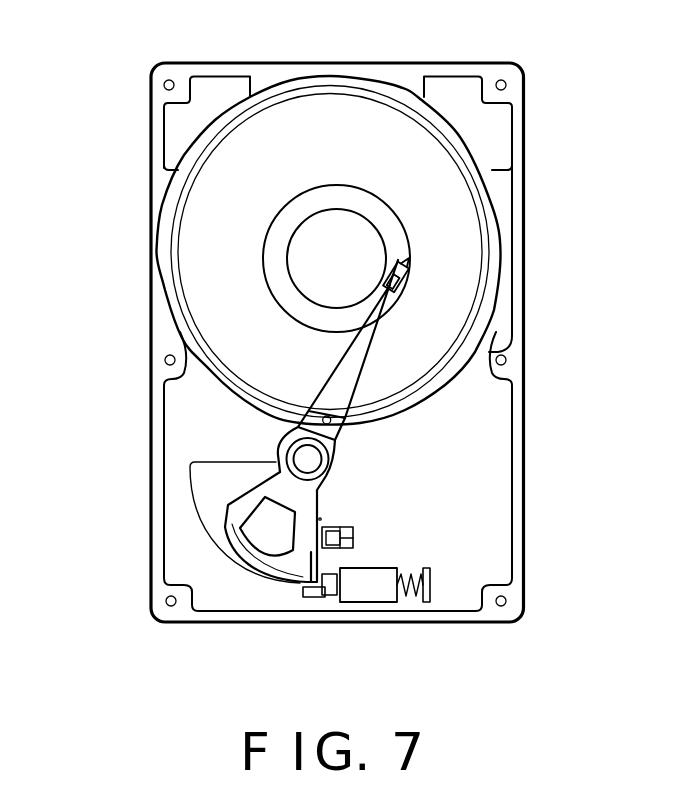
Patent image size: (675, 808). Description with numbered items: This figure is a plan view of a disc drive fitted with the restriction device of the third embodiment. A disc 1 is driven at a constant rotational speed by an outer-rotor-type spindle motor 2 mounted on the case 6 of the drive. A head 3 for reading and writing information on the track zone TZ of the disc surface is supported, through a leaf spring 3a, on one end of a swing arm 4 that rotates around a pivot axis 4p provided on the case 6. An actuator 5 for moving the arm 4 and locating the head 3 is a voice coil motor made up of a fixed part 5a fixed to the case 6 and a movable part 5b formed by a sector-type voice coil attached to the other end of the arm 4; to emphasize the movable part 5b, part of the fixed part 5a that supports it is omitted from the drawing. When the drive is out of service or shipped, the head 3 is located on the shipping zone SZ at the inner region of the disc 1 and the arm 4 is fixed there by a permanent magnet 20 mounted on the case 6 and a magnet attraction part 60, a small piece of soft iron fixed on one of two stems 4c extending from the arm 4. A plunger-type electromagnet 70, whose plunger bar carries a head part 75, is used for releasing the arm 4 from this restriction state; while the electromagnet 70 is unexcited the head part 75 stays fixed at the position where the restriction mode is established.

The disc 1 is at (225, 128).
The track zone TZ is at (290, 127).
The shipping zone SZ is at (343, 190).
The spindle motor 2 is at (288, 270).
The head 3 is at (408, 256).
The leaf spring 3a is at (362, 380).
The arm 4 is at (297, 414).
The pivot axis 4p is at (311, 458).
The stem 4c is at (308, 598).
The actuator 5 is at (167, 522).
The fixed part 5a is at (207, 492).
The movable part 5b is at (232, 545).
The case 6 is at (497, 70).
The permanent magnet 20 is at (353, 537).
The magnet attraction part 60 is at (323, 517).
The electromagnet 70 is at (382, 573).
The head part 75 is at (328, 594).